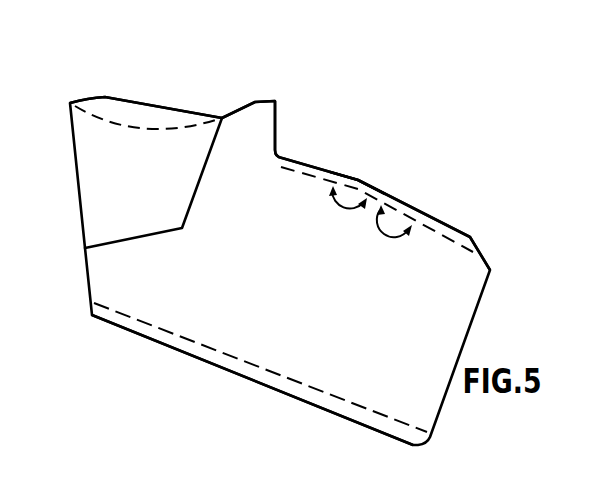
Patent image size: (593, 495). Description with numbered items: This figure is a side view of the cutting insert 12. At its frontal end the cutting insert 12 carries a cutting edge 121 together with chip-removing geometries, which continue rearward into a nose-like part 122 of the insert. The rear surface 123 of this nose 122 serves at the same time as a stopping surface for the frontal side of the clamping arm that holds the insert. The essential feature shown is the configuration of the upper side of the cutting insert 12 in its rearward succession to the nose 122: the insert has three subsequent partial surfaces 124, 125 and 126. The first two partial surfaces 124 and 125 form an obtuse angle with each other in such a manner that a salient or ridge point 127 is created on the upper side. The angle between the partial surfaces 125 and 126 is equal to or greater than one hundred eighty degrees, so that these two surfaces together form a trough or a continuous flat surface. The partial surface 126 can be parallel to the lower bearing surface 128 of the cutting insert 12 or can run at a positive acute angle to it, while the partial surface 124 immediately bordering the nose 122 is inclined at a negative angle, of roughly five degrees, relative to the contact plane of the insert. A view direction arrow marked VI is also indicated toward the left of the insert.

The cutting insert 12 is at (155, 317).
The cutting edge 121 is at (62, 78).
The nose-like part 122 is at (250, 122).
The rear surface 123 is at (278, 126).
The first partial surface 124 is at (318, 168).
The second partial surface 125 is at (381, 203).
The third partial surface 126 is at (443, 232).
The ridge point 127 is at (358, 180).
The lower bearing surface 128 is at (259, 374).
The section line VI is at (66, 195).